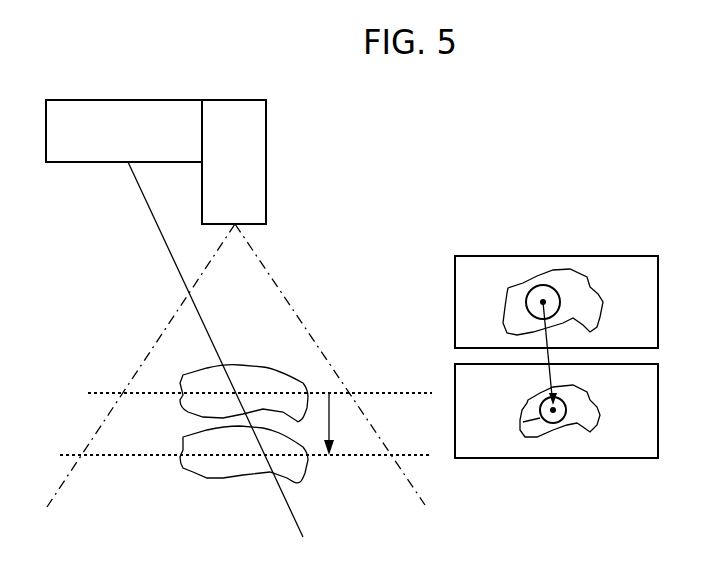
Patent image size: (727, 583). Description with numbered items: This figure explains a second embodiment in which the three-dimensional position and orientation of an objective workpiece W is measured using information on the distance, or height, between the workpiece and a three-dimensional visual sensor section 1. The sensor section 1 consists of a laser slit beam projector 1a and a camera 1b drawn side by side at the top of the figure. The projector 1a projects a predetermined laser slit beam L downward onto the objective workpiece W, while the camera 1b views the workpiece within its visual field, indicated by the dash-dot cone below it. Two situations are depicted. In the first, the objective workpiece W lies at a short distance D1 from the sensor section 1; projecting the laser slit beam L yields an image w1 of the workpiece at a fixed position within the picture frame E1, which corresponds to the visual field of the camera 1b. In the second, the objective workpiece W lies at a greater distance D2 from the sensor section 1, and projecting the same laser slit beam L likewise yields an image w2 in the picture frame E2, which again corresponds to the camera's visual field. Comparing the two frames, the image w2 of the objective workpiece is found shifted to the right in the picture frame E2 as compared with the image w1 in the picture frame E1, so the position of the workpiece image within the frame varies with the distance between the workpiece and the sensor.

The sensor section 1 is at (160, 118).
The laser slit beam projector 1a is at (111, 100).
The camera 1b is at (243, 100).
The laser slit beam L is at (147, 205).
The short distance D1 is at (260, 379).
The distance D2 is at (246, 424).
The objective workpiece W is at (186, 409).
The picture frame E1 is at (577, 258).
The picture frame E2 is at (603, 458).
The image of the objective workpiece w1 is at (528, 288).
The image of the objective workpiece w2 is at (520, 425).